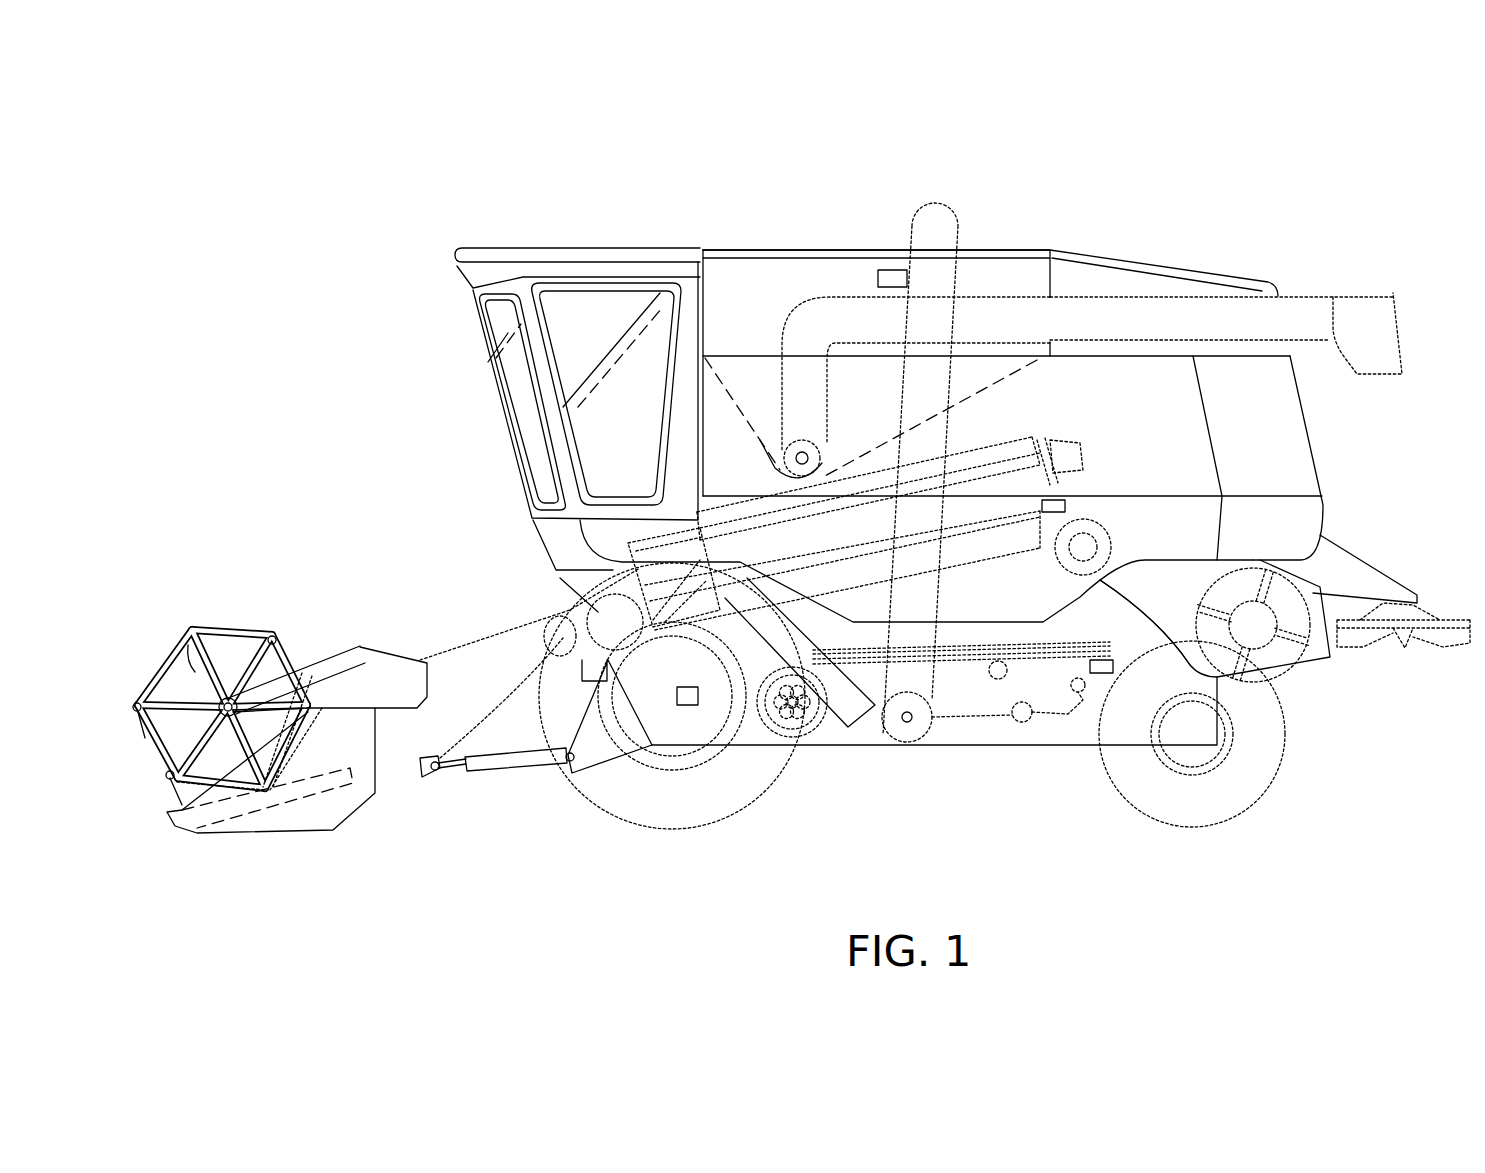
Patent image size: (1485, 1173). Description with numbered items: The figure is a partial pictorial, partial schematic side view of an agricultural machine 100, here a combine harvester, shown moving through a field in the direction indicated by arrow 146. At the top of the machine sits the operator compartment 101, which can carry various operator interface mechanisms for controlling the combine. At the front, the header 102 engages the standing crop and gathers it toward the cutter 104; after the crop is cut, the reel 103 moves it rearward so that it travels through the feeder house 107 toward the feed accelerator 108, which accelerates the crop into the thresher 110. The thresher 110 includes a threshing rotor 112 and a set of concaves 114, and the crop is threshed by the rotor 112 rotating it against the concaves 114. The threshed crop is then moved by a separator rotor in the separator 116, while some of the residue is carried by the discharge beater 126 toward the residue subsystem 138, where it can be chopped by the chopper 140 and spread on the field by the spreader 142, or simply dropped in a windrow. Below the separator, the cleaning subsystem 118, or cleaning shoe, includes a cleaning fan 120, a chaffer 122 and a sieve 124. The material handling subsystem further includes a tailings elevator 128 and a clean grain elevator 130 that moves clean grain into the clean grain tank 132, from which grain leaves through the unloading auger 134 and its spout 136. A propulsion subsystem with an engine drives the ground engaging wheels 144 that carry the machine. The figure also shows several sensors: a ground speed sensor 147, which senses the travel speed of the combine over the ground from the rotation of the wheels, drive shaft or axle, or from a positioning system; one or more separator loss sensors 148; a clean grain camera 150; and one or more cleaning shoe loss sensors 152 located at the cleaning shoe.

The agricultural machine 100 is at (1326, 110).
The operator compartment 101 is at (575, 250).
The header 102 is at (253, 628).
The reel 103 is at (195, 670).
The cutter 104 is at (165, 830).
The feeder house 107 is at (460, 640).
The feed accelerator 108 is at (593, 607).
The thresher 110 is at (983, 433).
The threshing rotor 112 is at (1040, 424).
The concaves 114 is at (1042, 522).
The separator 116 is at (967, 566).
The cleaning subsystem 118 is at (1104, 704).
The cleaning fan 120 is at (762, 718).
The chaffer 122 is at (1097, 640).
The sieve 124 is at (1017, 655).
The discharge beater 126 is at (1108, 533).
The tailings elevator 128 is at (845, 722).
The clean grain elevator 130 is at (930, 677).
The clean grain tank 132 is at (740, 341).
The unloading auger 134 is at (822, 463).
The spout 136 is at (1367, 293).
The residue subsystem 138 is at (1385, 547).
The chopper 140 is at (1262, 680).
The spreader 142 is at (1362, 652).
The ground engaging wheels 144 is at (583, 795).
The arrow 146 is at (416, 464).
The ground speed sensor 147 is at (686, 706).
The separator loss sensors 148 is at (1054, 505).
The clean grain camera 150 is at (885, 269).
The cleaning shoe loss sensors 152 is at (1112, 668).